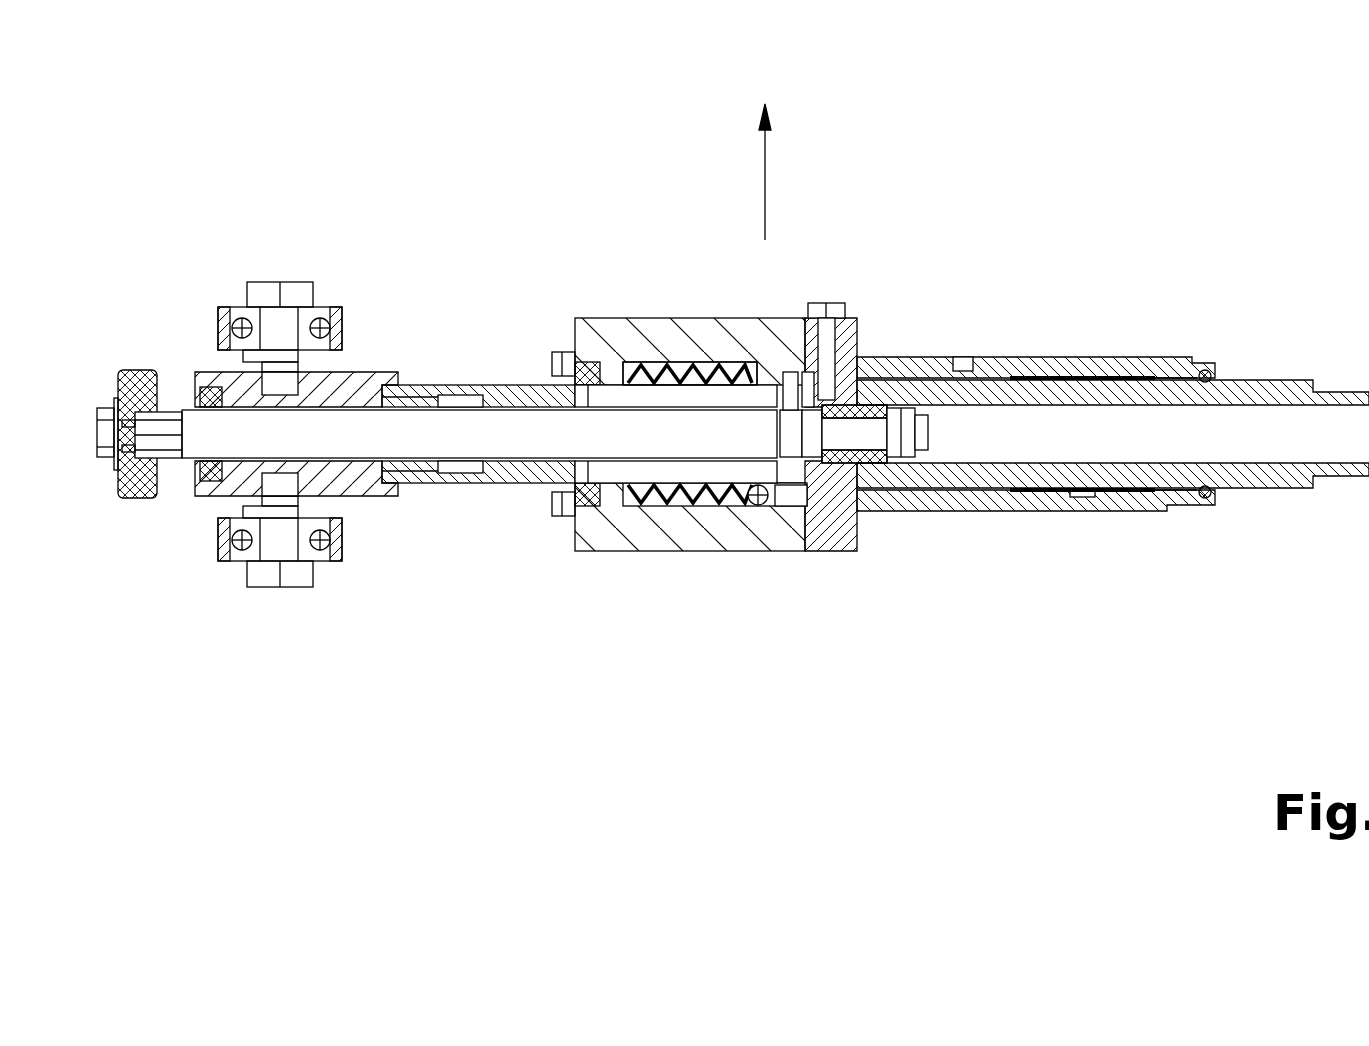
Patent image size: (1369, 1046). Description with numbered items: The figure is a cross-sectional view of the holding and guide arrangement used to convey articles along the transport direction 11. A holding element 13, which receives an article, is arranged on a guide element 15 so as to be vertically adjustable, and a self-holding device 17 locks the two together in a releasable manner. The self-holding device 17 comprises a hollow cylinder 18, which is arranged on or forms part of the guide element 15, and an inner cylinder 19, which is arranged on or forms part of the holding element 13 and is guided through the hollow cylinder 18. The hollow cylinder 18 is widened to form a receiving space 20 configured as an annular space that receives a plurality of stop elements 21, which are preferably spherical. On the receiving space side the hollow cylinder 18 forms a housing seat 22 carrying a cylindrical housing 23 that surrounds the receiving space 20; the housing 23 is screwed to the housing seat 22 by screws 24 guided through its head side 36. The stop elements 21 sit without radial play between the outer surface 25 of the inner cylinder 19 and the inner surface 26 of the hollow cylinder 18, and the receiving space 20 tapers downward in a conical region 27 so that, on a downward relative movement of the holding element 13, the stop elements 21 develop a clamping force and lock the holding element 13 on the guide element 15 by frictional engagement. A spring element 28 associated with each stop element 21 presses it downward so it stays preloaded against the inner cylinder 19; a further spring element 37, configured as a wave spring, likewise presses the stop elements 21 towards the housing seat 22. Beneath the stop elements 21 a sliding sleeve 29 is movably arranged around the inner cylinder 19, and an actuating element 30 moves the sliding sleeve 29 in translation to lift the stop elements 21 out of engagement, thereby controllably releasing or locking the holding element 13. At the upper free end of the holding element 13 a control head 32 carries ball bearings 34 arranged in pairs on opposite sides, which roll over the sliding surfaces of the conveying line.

The transport direction 11 is at (767, 177).
The holding element 13 is at (1114, 300).
The guide element 15 is at (517, 195).
The self-holding device 17 is at (868, 185).
The hollow cylinder 18 is at (466, 386).
The inner cylinder 19 is at (1082, 473).
The receiving space 20 is at (784, 372).
The stop element 21 is at (757, 505).
The housing seat 22 is at (843, 552).
The housing 23 is at (597, 552).
The screw 24 is at (552, 360).
The outer surface 25 is at (975, 490).
The inner surface 26 is at (803, 552).
The conical region 27 is at (805, 617).
The spring element 28 is at (645, 365).
The sliding sleeve 29 is at (805, 372).
The actuating element 30 is at (128, 432).
The control head 32 is at (352, 610).
The ball bearing 34 is at (340, 330).
The head side 36 is at (575, 320).
The spring element 37 is at (690, 365).